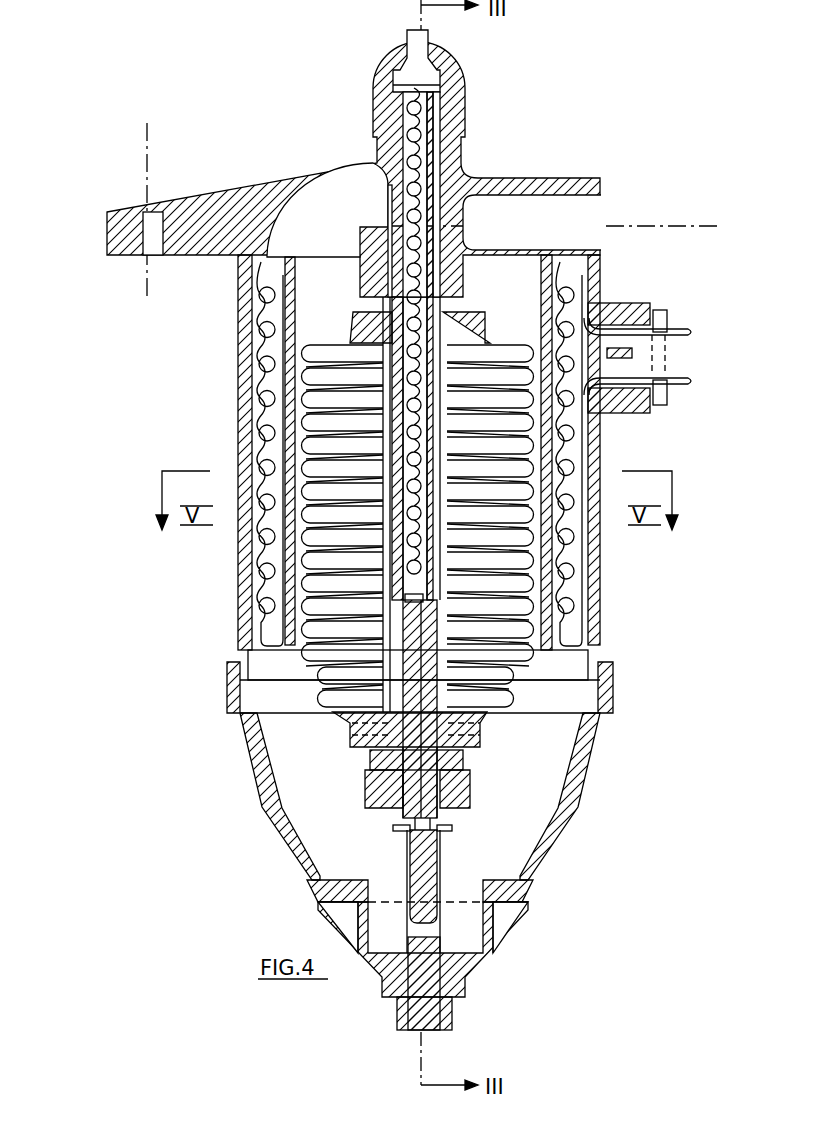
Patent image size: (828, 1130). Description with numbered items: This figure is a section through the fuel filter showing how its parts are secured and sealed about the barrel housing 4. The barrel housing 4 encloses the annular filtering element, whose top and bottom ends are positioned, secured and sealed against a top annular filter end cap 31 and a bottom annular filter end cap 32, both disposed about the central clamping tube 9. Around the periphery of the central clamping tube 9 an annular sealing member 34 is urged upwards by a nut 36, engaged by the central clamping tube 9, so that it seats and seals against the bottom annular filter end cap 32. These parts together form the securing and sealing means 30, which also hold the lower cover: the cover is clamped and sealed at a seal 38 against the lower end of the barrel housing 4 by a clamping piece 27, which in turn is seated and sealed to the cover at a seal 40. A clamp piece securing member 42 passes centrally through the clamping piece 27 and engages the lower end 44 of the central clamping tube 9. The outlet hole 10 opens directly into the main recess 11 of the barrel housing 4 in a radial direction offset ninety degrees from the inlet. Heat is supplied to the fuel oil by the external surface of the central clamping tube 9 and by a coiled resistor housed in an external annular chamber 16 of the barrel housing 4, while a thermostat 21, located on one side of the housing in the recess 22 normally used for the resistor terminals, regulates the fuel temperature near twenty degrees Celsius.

The barrel housing 4 is at (600, 582).
The central clamping tube 9 is at (432, 768).
The outlet hole 10 is at (583, 213).
The main recess 11 is at (333, 291).
The external annular chamber 16 is at (258, 600).
The thermostat 21 is at (618, 348).
The recess 22 is at (615, 405).
The clamping piece 27 is at (392, 965).
The securing and sealing means 30 is at (520, 788).
The top annular filter end cap 31 is at (352, 332).
The bottom annular filter end cap 32 is at (340, 727).
The annular sealing member 34 is at (373, 758).
The nut 36 is at (378, 790).
The seal 38 is at (605, 690).
The seal 40 is at (512, 907).
The clamp piece securing member 42 is at (440, 1012).
The lower end 44 is at (408, 858).